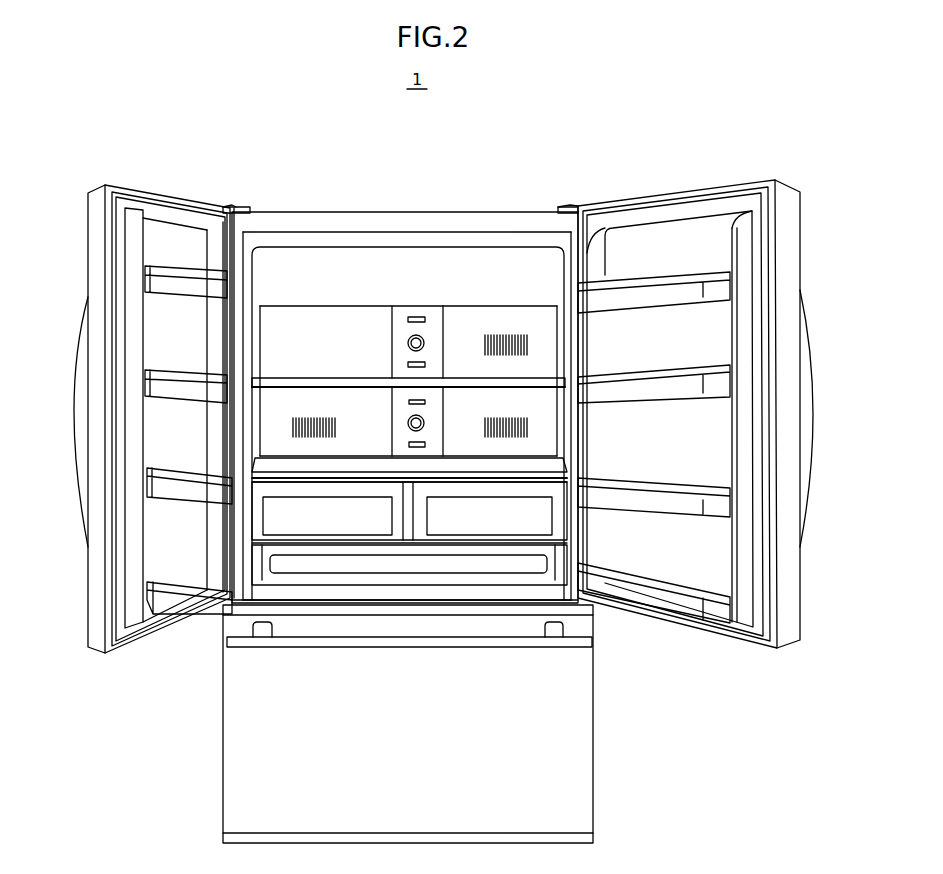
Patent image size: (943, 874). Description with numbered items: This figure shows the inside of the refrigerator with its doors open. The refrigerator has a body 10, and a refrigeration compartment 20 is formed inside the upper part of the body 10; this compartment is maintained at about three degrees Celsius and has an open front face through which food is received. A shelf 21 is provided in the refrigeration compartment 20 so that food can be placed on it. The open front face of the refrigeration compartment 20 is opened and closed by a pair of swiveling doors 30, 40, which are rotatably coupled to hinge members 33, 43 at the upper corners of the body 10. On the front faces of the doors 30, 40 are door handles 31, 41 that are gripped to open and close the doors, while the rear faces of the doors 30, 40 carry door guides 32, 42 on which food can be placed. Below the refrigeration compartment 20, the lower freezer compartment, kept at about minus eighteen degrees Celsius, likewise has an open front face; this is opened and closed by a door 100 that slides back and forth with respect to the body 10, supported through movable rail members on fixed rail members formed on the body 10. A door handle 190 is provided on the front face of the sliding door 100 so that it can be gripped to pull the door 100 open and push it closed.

The body 10 is at (405, 215).
The refrigeration compartment 20 is at (466, 272).
The shelf 21 is at (466, 384).
The door 30 is at (128, 419).
The door handle 31 is at (80, 394).
The door guide 32 is at (157, 488).
The hinge member 33 is at (242, 205).
The door 40 is at (716, 399).
The door handle 41 is at (806, 354).
The door guide 42 is at (665, 290).
The hinge member 43 is at (562, 208).
The door 100 is at (240, 737).
The door handle 190 is at (268, 647).